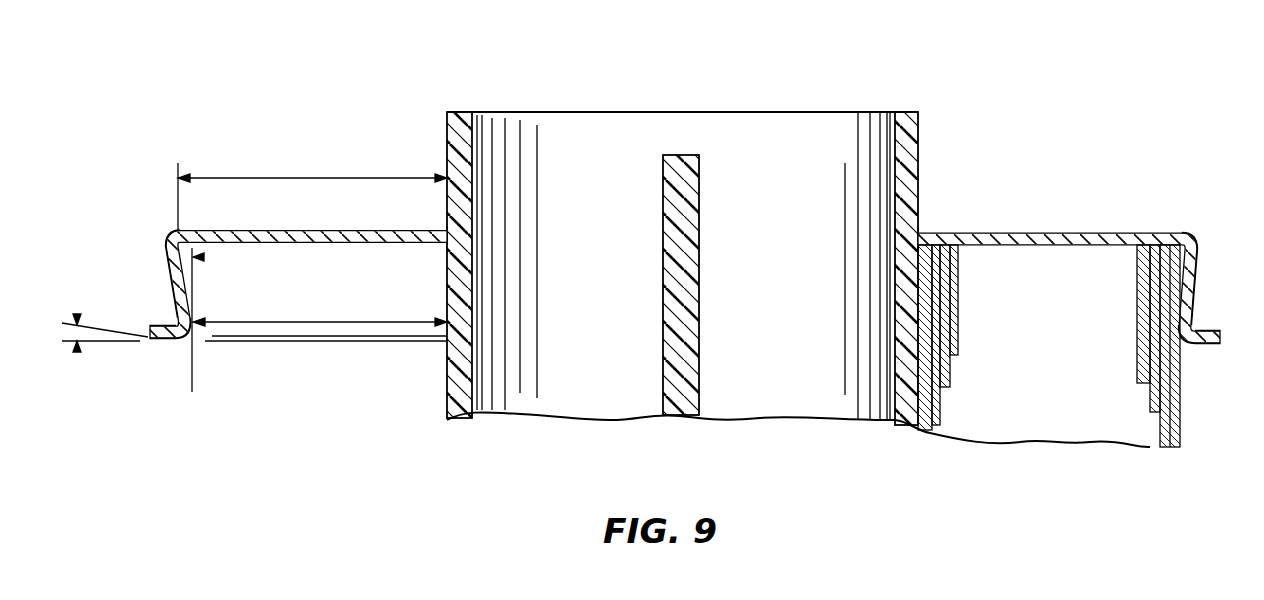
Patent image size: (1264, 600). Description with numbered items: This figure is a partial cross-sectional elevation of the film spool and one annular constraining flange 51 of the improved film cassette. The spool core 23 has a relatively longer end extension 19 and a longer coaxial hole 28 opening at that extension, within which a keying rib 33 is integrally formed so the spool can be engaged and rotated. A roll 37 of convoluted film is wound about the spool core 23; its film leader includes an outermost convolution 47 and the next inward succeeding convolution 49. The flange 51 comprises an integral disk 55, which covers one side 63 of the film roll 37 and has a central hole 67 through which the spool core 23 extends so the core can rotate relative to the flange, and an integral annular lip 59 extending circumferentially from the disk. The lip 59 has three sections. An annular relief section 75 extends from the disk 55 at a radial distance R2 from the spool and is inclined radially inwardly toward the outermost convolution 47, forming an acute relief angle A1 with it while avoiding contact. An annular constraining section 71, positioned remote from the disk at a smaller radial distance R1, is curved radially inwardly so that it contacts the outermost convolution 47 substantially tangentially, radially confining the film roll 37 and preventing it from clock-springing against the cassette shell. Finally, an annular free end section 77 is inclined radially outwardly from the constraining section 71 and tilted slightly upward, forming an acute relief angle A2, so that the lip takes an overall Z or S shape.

The longer end extension 19 is at (466, 114).
The longer coaxial hole 28 is at (645, 125).
The spool core 23 is at (923, 112).
The keying rib 33 is at (698, 212).
The film roll 37 is at (1035, 390).
The disk 55 is at (358, 230).
The flange 51 is at (164, 236).
The annular lip 59 is at (167, 259).
The annular relief section 75 is at (172, 292).
The annular constraining section 71 is at (176, 315).
The annular free end section 77 is at (151, 342).
The central hole 67 is at (452, 231).
The outermost convolution 47 is at (184, 372).
The next inward succeeding convolution 49 is at (1177, 420).
The side of film roll 63 is at (1148, 243).
The radial distance R1 is at (334, 325).
The radial distance R2 is at (298, 182).
The relief angle A1 is at (202, 257).
The relief angle A2 is at (86, 287).